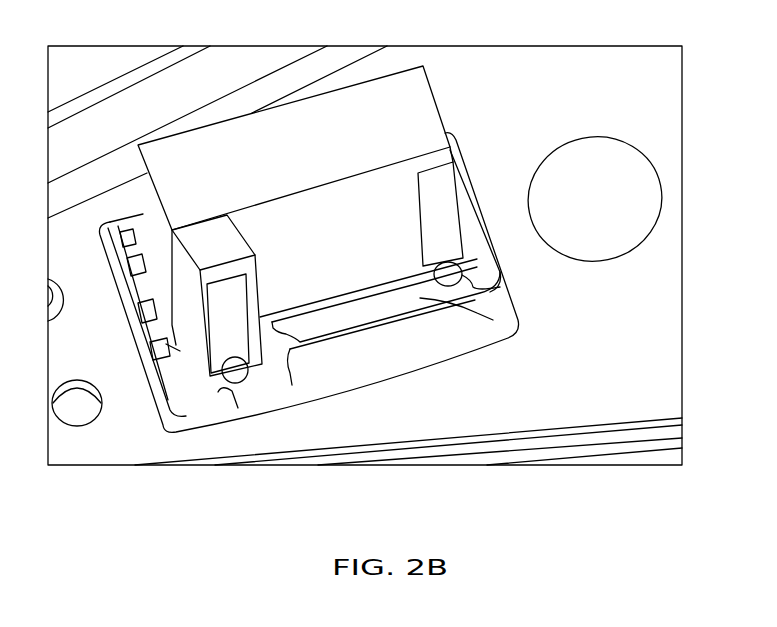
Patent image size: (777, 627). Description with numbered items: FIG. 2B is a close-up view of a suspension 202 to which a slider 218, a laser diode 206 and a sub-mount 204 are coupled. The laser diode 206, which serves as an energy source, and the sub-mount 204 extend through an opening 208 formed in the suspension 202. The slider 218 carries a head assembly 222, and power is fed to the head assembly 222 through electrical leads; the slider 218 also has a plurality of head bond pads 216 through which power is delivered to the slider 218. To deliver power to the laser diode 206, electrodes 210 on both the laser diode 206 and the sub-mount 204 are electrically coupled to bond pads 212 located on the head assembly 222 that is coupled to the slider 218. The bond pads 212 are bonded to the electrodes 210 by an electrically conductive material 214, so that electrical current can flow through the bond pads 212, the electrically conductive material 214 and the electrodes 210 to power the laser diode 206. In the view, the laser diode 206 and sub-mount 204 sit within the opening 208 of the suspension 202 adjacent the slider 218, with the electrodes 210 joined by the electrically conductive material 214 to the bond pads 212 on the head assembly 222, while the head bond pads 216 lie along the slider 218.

The suspension 202 is at (580, 89).
The sub-mount 204 is at (302, 160).
The laser diode 206 is at (232, 250).
The opening 208 is at (162, 380).
The electrodes 210 is at (232, 302).
The bond pads 212 is at (518, 315).
The electrically conductive material 214 is at (442, 272).
The head bond pads 216 is at (140, 276).
The slider 218 is at (417, 355).
The head assembly 222 is at (172, 348).